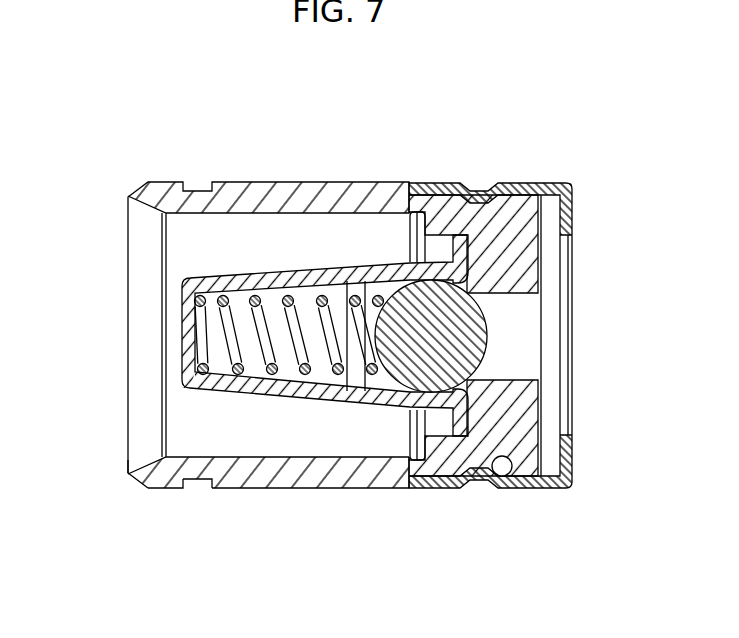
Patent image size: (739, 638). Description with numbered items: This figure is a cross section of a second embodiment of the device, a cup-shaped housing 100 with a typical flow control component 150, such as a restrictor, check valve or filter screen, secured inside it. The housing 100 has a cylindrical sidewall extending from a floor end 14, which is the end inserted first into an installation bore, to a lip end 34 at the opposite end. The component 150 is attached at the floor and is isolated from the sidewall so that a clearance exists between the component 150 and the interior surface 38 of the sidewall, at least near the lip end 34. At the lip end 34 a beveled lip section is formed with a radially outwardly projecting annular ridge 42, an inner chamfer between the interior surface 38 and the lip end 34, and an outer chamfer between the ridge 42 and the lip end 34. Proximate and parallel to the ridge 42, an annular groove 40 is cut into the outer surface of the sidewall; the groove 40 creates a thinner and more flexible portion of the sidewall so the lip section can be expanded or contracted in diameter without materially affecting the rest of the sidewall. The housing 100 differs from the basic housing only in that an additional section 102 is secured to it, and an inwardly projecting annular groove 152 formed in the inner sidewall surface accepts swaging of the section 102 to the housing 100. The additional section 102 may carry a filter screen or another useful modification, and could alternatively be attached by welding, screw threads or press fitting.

The housing 100 is at (340, 516).
The interior surface 38 is at (288, 218).
The lip end 34 is at (132, 473).
The annular ridge 42 is at (152, 485).
The annular groove 40 is at (198, 476).
The additional section 102 is at (567, 184).
The floor end 14 is at (540, 452).
The flow control component 150 is at (363, 272).
The inwardly projecting annular groove 152 is at (503, 477).